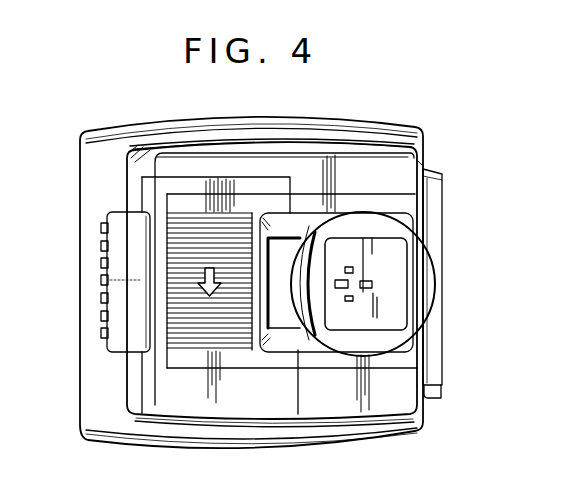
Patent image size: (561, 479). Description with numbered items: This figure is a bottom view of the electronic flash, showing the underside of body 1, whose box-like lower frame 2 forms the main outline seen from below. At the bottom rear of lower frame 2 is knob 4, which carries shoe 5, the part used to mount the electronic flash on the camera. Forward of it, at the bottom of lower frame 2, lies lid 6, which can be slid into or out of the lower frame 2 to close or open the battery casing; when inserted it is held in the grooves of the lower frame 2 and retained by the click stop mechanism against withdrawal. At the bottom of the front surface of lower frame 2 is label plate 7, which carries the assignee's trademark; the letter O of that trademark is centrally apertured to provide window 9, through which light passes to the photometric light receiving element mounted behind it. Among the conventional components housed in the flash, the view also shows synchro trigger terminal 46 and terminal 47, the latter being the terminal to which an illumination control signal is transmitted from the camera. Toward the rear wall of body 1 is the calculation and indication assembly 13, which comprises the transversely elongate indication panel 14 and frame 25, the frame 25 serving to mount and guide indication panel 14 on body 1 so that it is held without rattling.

The body 1 is at (57, 148).
The lower frame 2 is at (188, 147).
The knob 4 is at (427, 279).
The shoe 5 is at (396, 251).
The lid 6 is at (291, 193).
The label plate 7 is at (109, 273).
The window 9 is at (104, 331).
The calculation and indication assembly 13 is at (437, 166).
The indication panel 14 is at (432, 397).
The frame 25 is at (433, 186).
The synchro trigger terminal 46 is at (366, 285).
The terminal 47 is at (349, 266).